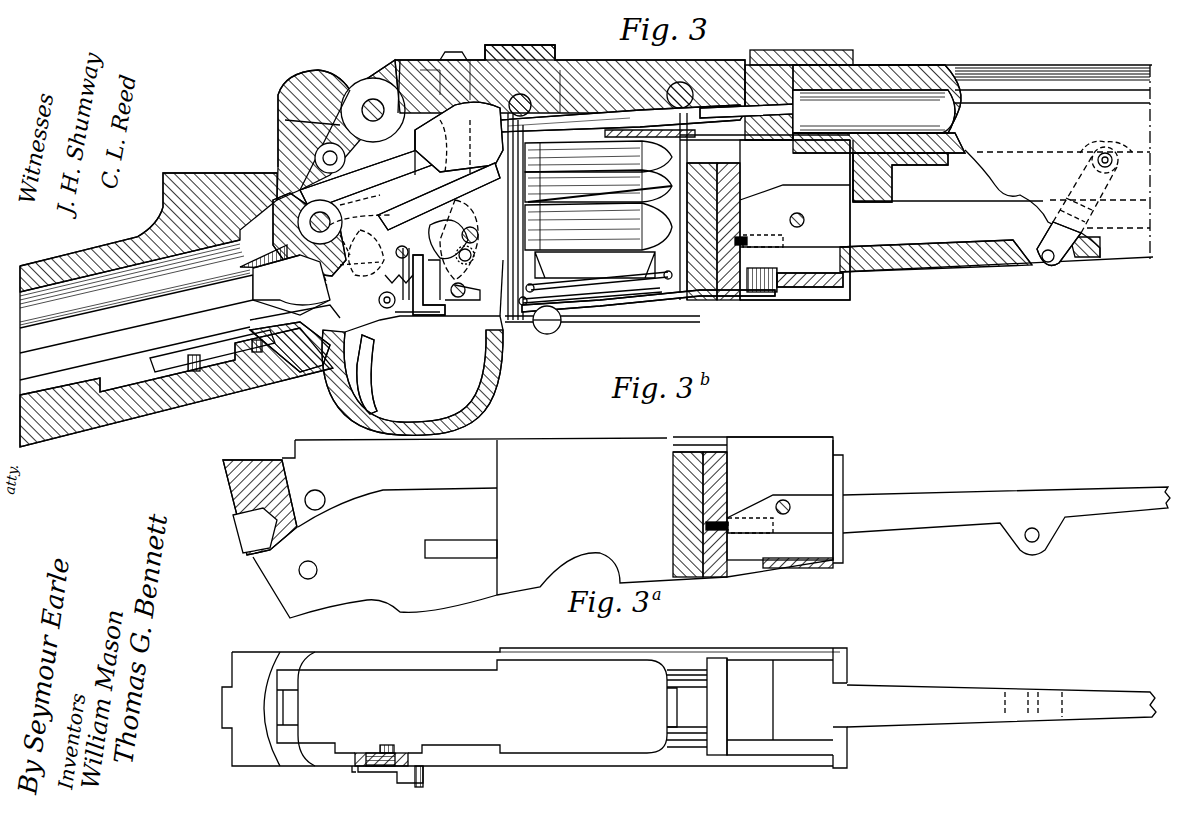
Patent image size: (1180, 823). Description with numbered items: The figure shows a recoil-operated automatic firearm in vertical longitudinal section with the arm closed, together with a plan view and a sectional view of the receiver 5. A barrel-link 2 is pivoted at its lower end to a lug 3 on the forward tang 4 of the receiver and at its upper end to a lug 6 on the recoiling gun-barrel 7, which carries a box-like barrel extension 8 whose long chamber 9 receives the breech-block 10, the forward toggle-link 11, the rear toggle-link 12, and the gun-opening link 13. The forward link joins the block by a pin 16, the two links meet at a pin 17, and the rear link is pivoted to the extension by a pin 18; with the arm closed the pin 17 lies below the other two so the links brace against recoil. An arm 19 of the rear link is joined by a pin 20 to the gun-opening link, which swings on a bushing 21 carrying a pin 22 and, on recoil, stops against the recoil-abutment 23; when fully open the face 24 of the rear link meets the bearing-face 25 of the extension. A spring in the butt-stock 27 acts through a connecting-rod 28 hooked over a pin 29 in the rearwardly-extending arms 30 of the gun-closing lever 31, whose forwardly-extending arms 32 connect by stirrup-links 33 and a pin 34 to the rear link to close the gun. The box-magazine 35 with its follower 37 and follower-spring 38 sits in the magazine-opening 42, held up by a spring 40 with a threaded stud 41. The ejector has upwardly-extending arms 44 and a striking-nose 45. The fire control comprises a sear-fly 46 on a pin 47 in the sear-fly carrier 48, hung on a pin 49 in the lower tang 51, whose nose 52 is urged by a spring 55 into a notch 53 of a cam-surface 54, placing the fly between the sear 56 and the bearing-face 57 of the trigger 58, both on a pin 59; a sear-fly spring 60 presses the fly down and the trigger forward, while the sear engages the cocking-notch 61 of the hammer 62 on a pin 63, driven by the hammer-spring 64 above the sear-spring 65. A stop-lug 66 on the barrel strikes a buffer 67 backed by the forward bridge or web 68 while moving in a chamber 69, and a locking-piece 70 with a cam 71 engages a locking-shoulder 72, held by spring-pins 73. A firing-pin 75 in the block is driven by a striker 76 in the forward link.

In FIG. 3, the barrel-link 2 is at (1077, 209).
In FIG. 3, the lug 3 is at (1033, 262).
In FIG. 3B, the lug 3 is at (1055, 530).
In FIG. 3, the forward tang 4 is at (996, 212).
In FIG. 3B, the forward tang 4 is at (1006, 521).
In FIG. 3A, the forward tang 4 is at (1001, 706).
In FIG. 3, the receiver 5 is at (795, 220).
In FIG. 3B, the receiver 5 is at (734, 507).
In FIG. 3A, the receiver 5 is at (688, 656).
In FIG. 3, the lug 6 is at (1090, 158).
In FIG. 3, the recoiling gun-barrel 7 is at (1060, 80).
In FIG. 3, the barrel extension 8 is at (318, 70).
In FIG. 3, the chamber 9 is at (394, 76).
In FIG. 3, the breech-block 10 is at (708, 70).
In FIG. 3, the forward toggle-link 11 is at (590, 75).
In FIG. 3, the rear toggle-link 12 is at (440, 75).
In FIG. 3, the gun-opening link 13 is at (358, 168).
In FIG. 3, the pin 16 is at (678, 82).
In FIG. 3, the pin 17 is at (522, 93).
In FIG. 3, the pin 18 is at (373, 99).
In FIG. 3, the arm 19 is at (285, 128).
In FIG. 3, the pin 20 is at (330, 165).
In FIG. 3, the bushing 21 is at (322, 218).
In FIG. 3, the pin 22 is at (360, 193).
In FIG. 3B, the recoil-abutment 23 is at (288, 473).
In FIG. 3A, the recoil-abutment 23 is at (290, 704).
In FIG. 3, the face 24 is at (440, 58).
In FIG. 3, the bearing-face 25 is at (340, 78).
In FIG. 3, the butt-stock 27 is at (116, 245).
In FIG. 3, the connecting-rod 28 is at (136, 310).
In FIG. 3, the pin 29 is at (283, 300).
In FIG. 3, the rearwardly-extending arms 30 is at (294, 281).
In FIG. 3, the gun-closing lever 31 is at (352, 240).
In FIG. 3, the forwardly-extending arms 32 is at (408, 152).
In FIG. 3, the stirrup-links 33 is at (470, 60).
In FIG. 3, the pin 34 is at (425, 68).
In FIG. 3, the box-magazine 35 is at (648, 300).
In FIG. 3, the follower 37 is at (602, 217).
In FIG. 3, the follower-spring 38 is at (612, 305).
In FIG. 3, the spring 40 is at (575, 325).
In FIG. 3, the threaded stud 41 is at (762, 292).
In FIG. 3, the magazine-opening 42 is at (412, 347).
In FIG. 3B, the magazine-opening 42 is at (490, 528).
In FIG. 3A, the magazine-opening 42 is at (531, 707).
In FIG. 3, the upwardly-extending arms 44 is at (293, 234).
In FIG. 3, the striking-nose 45 is at (459, 138).
In FIG. 3, the sear-fly 46 is at (413, 320).
In FIG. 3, the pin 47 is at (395, 274).
In FIG. 3, the sear-fly carrier 48 is at (398, 318).
In FIG. 3, the pin 49 is at (402, 246).
In FIG. 3, the lower tang 51 is at (292, 368).
In FIG. 3, the nose 52 is at (439, 196).
In FIG. 3, the notch 53 is at (360, 215).
In FIG. 3, the cam-surface 54 is at (368, 253).
In FIG. 3, the spring 55 is at (448, 229).
In FIG. 3, the sear 56 is at (432, 315).
In FIG. 3, the bearing-face 57 is at (420, 325).
In FIG. 3, the trigger 58 is at (378, 380).
In FIG. 3, the pin 59 is at (458, 300).
In FIG. 3, the sear-fly spring 60 is at (380, 295).
In FIG. 3, the cocking-notch 61 is at (475, 251).
In FIG. 3, the hammer 62 is at (463, 240).
In FIG. 3, the pin 63 is at (479, 228).
In FIG. 3, the hammer-spring 64 is at (252, 345).
In FIG. 3, the sear-spring 65 is at (328, 312).
In FIG. 3, the stop-lug 66 is at (893, 176).
In FIG. 3, the buffer 67 is at (730, 185).
In FIG. 3B, the buffer 67 is at (718, 472).
In FIG. 3A, the buffer 67 is at (715, 702).
In FIG. 3, the forward bridge or web 68 is at (745, 205).
In FIG. 3B, the forward bridge or web 68 is at (685, 450).
In FIG. 3A, the forward bridge or web 68 is at (668, 702).
In FIG. 3, the chamber 69 is at (792, 220).
In FIG. 3B, the chamber 69 is at (774, 502).
In FIG. 3A, the chamber 69 is at (782, 658).
In FIG. 3A, the locking-piece 70 is at (398, 783).
In FIG. 3A, the cam 71 is at (389, 745).
In FIG. 3, the locking-shoulder 72 is at (360, 262).
In FIG. 3A, the spring-pins 73 is at (350, 772).
In FIG. 3, the firing-pin 75 is at (720, 108).
In FIG. 3, the striker 76 is at (612, 112).